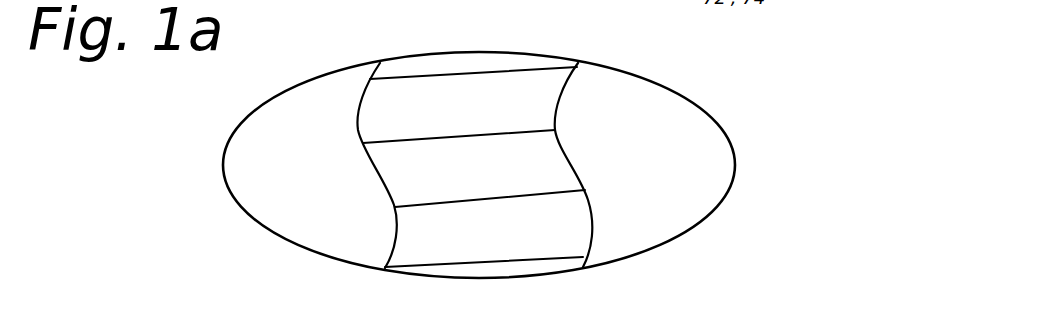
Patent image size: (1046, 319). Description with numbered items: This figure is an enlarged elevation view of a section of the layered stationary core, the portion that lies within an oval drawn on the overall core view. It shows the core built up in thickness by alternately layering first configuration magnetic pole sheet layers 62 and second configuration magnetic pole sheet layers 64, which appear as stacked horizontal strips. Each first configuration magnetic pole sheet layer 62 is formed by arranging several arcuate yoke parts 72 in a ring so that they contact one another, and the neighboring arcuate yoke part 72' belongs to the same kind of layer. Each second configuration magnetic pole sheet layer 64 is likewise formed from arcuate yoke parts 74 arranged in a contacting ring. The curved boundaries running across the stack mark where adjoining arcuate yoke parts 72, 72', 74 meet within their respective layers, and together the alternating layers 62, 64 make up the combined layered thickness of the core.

The first configuration magnetic pole sheet layer 62 is at (420, 95).
The arcuate yoke part 72 is at (308, 195).
The second configuration magnetic pole sheet layer 64 is at (417, 163).
The arcuate yoke part 74 is at (445, 183).
The arcuate yoke part 72' is at (614, 165).